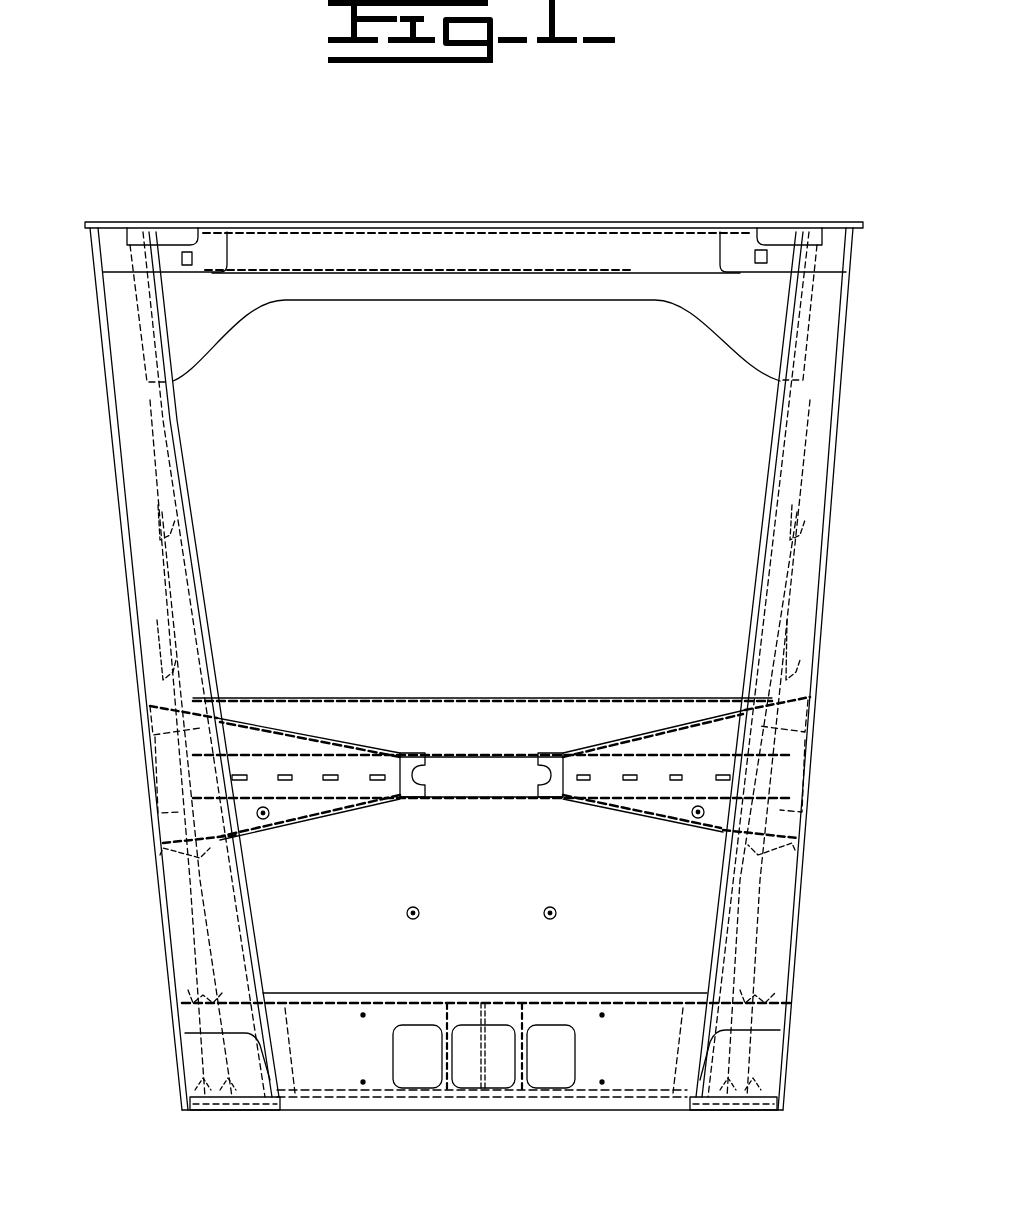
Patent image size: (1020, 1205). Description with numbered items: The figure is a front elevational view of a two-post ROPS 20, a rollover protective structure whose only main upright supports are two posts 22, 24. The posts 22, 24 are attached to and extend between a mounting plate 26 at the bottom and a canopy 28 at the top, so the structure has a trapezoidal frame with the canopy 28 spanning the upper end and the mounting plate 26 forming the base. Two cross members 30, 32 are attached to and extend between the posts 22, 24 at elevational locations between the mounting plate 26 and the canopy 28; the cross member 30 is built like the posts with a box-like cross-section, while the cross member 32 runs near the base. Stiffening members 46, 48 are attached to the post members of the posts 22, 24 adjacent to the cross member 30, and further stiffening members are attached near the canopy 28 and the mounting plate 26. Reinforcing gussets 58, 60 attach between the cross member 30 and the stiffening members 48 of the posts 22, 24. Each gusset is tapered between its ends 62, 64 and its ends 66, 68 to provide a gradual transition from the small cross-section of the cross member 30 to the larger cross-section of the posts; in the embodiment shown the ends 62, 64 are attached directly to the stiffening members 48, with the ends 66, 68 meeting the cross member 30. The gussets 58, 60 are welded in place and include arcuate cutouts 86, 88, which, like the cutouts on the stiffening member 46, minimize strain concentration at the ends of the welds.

The two-post ROPS 20 is at (710, 176).
The post 22 is at (172, 398).
The post 24 is at (775, 457).
The mounting plate 26 is at (458, 1112).
The canopy 28 is at (537, 222).
The cross member 30 is at (455, 800).
The cross member 32 is at (488, 993).
The stiffening member 46 is at (193, 560).
The stiffening member 48 is at (145, 682).
The reinforcing gusset 58 is at (315, 737).
The reinforcing gusset 60 is at (645, 727).
The gusset end 62 is at (153, 722).
The gusset end 64 is at (807, 720).
The gusset end 66 is at (407, 753).
The gusset end 68 is at (552, 753).
The arcuate cutout 86 is at (170, 742).
The arcuate cutout 88 is at (783, 808).